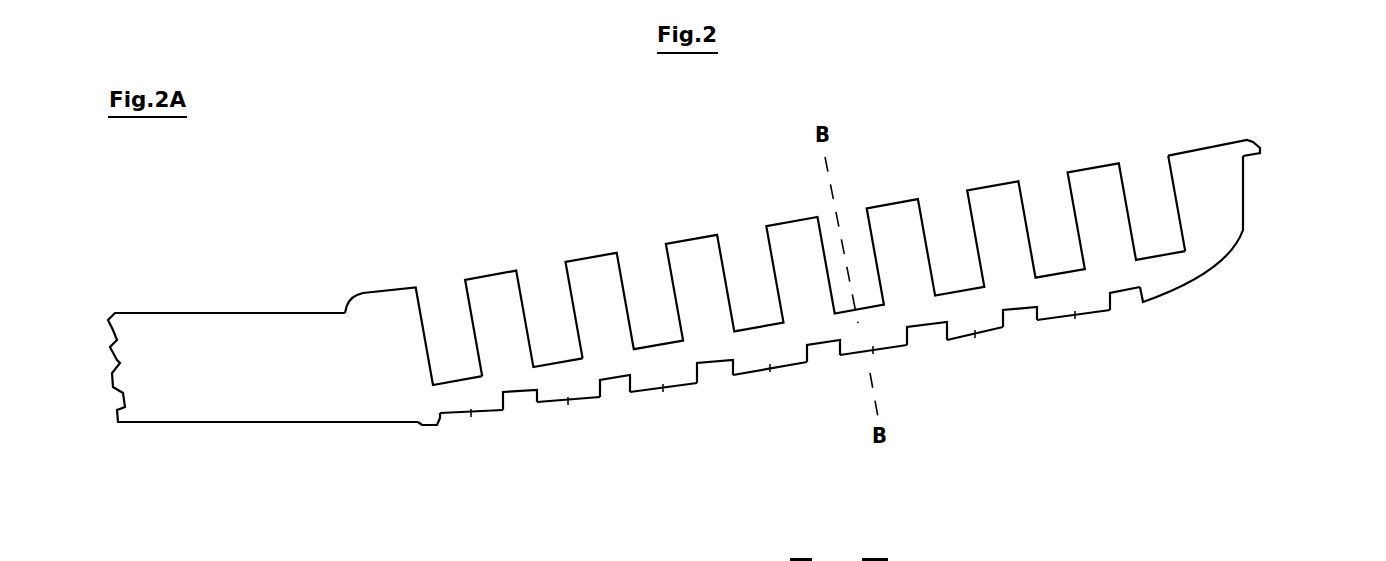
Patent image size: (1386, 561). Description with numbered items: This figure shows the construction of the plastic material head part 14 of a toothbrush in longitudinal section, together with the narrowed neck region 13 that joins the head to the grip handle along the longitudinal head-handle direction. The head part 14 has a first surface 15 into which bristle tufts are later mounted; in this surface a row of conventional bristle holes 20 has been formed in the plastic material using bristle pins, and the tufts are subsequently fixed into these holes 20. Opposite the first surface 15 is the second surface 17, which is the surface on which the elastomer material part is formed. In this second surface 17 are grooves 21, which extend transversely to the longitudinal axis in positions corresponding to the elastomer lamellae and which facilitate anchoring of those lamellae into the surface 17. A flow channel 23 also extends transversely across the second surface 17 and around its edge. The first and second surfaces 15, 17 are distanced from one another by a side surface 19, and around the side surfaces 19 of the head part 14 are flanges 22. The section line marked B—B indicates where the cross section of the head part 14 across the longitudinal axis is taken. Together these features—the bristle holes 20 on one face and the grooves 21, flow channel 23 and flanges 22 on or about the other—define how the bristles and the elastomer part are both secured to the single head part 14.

The narrowed neck region 13 is at (240, 421).
The head part 14 is at (388, 312).
The first surface 15 is at (683, 235).
The second surface 17 is at (1073, 318).
The side surface 19 is at (1253, 197).
The bristle holes 20 is at (538, 268).
The grooves 21 is at (922, 337).
The flanges 22 is at (1260, 153).
The flow channel 23 is at (456, 424).